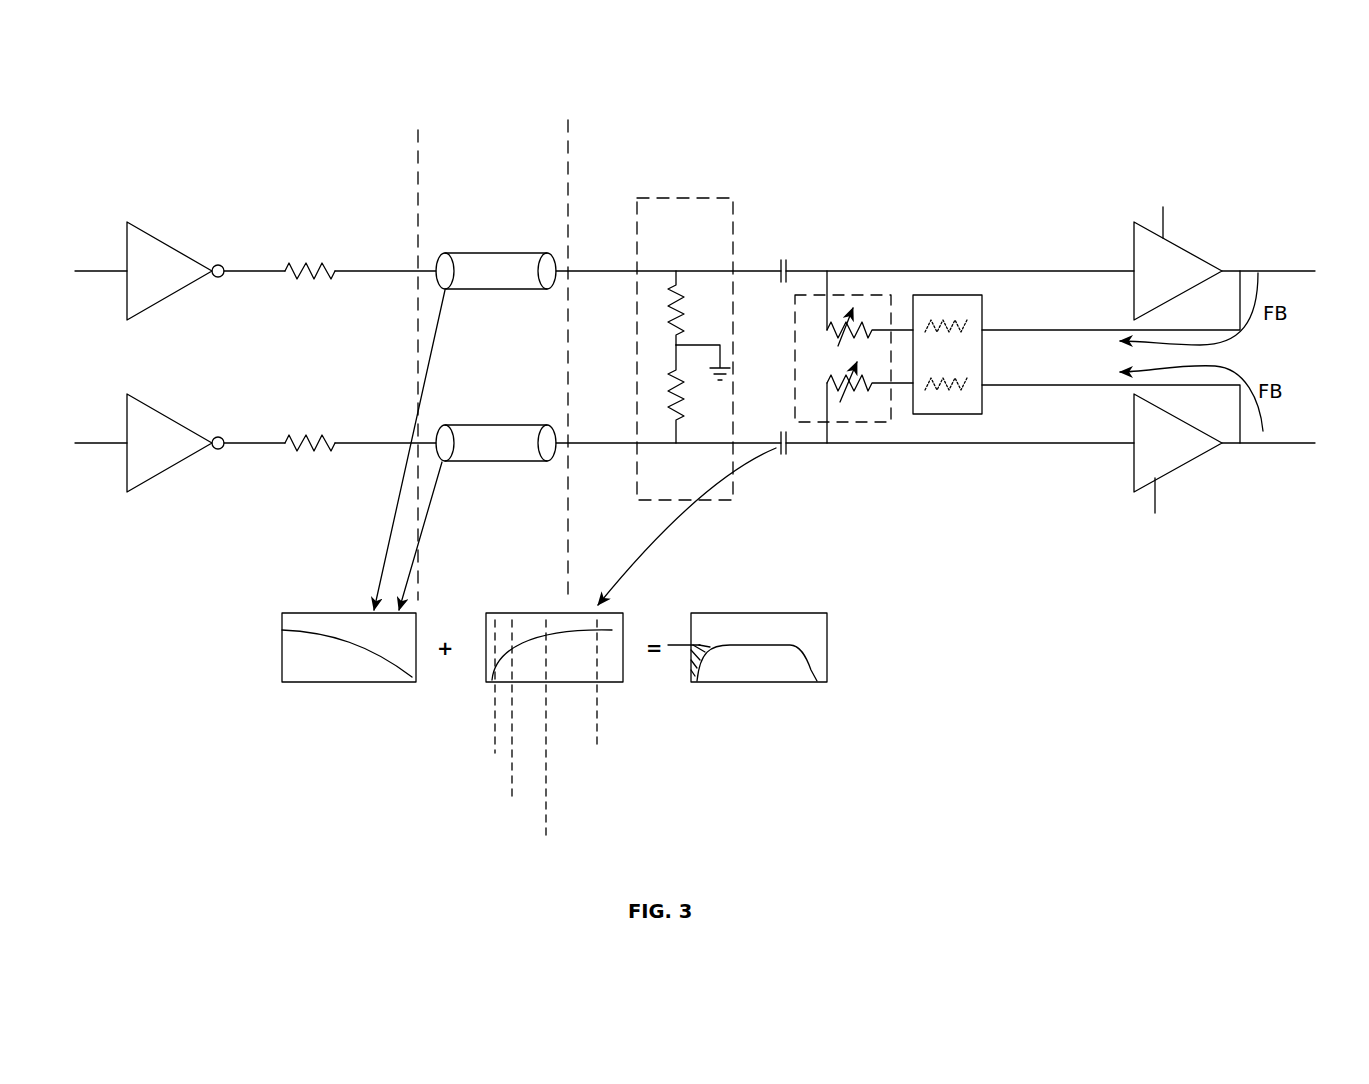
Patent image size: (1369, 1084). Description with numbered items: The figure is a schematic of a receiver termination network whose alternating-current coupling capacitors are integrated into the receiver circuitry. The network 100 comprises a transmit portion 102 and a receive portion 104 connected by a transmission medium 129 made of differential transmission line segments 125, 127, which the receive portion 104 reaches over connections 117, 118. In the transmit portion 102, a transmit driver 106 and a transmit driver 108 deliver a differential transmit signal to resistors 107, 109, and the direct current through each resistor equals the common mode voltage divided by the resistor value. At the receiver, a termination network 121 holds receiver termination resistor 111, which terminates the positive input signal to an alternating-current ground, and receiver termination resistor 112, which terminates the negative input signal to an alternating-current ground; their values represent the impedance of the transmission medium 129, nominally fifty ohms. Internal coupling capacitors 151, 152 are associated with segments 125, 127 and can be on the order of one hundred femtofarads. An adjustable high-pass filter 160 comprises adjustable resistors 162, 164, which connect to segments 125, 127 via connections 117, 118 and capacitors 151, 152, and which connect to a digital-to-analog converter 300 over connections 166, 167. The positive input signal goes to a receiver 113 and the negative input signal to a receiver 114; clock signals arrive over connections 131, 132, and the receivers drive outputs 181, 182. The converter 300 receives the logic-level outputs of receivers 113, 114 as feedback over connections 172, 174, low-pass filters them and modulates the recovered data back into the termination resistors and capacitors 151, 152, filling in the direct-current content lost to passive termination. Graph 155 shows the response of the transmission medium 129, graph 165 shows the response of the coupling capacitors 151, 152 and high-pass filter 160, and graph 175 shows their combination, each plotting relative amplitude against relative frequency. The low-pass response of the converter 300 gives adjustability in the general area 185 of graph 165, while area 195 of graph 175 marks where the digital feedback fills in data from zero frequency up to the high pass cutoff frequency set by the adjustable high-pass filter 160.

The network 100 is at (223, 114).
The transmit portion 102 is at (326, 164).
The receive portion 104 is at (907, 102).
The transmit driver 106 is at (150, 234).
The resistor 107 is at (299, 261).
The transmit driver 108 is at (153, 408).
The resistor 109 is at (297, 450).
The receiver termination resistor 111 is at (699, 318).
The receiver termination resistor 112 is at (684, 386).
The receiver 113 is at (1178, 271).
The receiver 114 is at (1178, 443).
The connection 117 is at (574, 272).
The connection 118 is at (577, 443).
The termination network 121 is at (685, 349).
The transmission line segment 125 is at (496, 271).
The transmission line segment 127 is at (496, 443).
The transmission medium 129 is at (505, 175).
The connection 131 is at (1167, 216).
The connection 132 is at (1158, 493).
The internal AC coupling capacitor 151 is at (780, 280).
The internal AC coupling capacitor 152 is at (778, 440).
The graph 155 is at (320, 612).
The adjustable high-pass filter 160 is at (862, 296).
The adjustable resistor 162 is at (858, 335).
The adjustable resistor 164 is at (838, 393).
The graph 165 is at (535, 612).
The connection 166 is at (910, 330).
The connection 167 is at (900, 392).
The connection 172 is at (1037, 329).
The connection 174 is at (1028, 386).
The graph 175 is at (733, 612).
The output 181 is at (1285, 271).
The output 182 is at (1288, 443).
The general area 185 is at (500, 676).
The area 195 is at (694, 658).
The DAC 300 is at (963, 414).